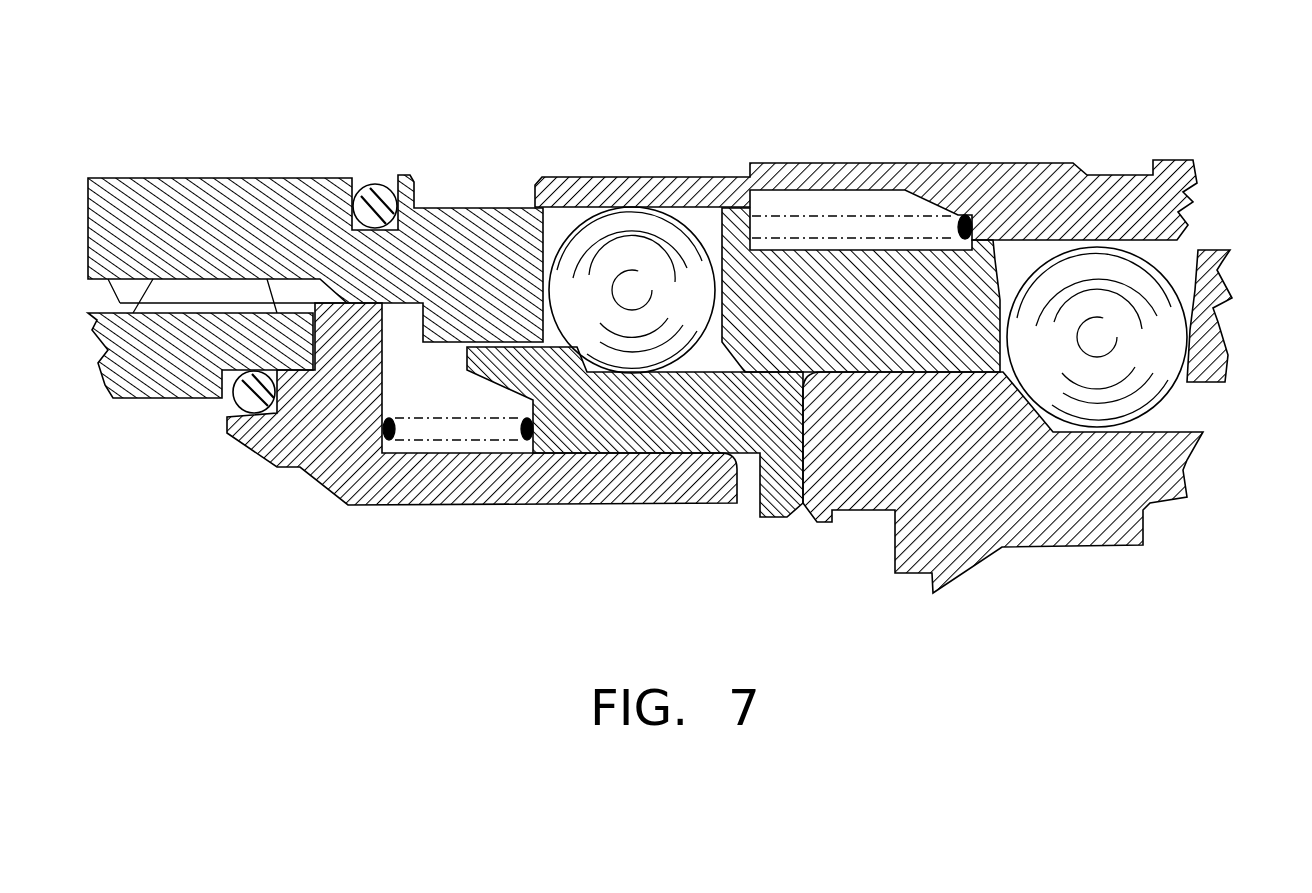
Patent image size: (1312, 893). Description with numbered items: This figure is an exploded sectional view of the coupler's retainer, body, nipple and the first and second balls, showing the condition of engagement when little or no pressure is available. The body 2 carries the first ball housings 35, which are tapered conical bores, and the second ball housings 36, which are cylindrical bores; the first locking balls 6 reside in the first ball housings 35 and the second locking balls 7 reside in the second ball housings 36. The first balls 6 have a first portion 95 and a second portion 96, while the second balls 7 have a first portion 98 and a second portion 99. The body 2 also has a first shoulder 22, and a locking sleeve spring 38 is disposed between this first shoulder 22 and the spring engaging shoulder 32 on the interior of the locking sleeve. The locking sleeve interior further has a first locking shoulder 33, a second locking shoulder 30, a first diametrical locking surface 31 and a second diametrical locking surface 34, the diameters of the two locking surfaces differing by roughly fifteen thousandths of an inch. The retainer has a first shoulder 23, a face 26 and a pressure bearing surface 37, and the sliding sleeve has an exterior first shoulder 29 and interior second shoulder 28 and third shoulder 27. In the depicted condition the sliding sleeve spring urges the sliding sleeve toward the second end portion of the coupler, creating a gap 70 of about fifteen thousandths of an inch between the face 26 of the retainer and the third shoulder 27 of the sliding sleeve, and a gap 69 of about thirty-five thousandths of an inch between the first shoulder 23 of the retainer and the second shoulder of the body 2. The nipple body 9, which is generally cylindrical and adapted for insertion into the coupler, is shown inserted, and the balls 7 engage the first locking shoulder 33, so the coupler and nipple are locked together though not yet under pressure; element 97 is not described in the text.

The body 2 is at (237, 223).
The gap 69 is at (400, 320).
The first shoulder 23 is at (390, 365).
The pressure bearing surface 37 is at (243, 452).
The housing lower part 97 is at (308, 448).
The second shoulder 28 is at (430, 480).
The first shoulder 29 is at (597, 332).
The first portion 98 is at (593, 334).
The second locking shoulder 30 is at (590, 207).
The second locking balls 7 is at (637, 288).
The second portion 99 is at (585, 255).
The second portion 96 is at (1190, 195).
The first ball housings 35 is at (980, 240).
The second ball housings 36 is at (712, 205).
The locking sleeve spring 38 is at (806, 225).
The first shoulder 22 is at (805, 250).
The spring engaging shoulder 32 is at (960, 220).
The first diametrical locking surface 31 is at (1022, 245).
The first locking shoulder 33 is at (1133, 270).
The nipple body 9 is at (1017, 480).
The second diametrical locking surface 34 is at (1193, 262).
The first locking balls 6 is at (1125, 330).
The first portion 95 is at (1117, 407).
The face 26 is at (728, 485).
The gap 70 is at (750, 477).
The third shoulder 27 is at (798, 507).